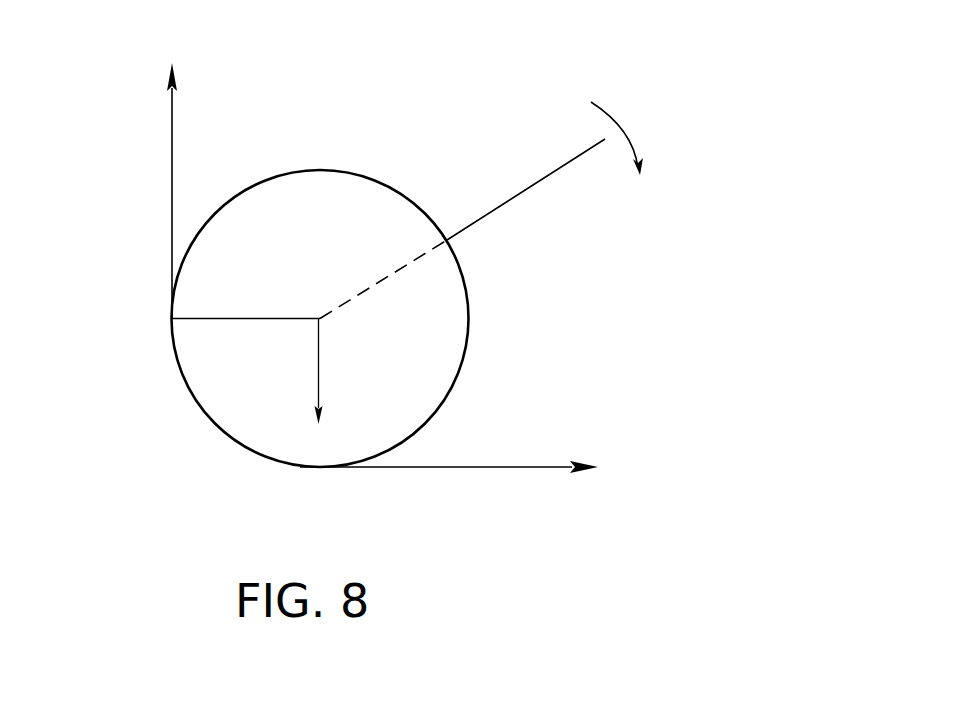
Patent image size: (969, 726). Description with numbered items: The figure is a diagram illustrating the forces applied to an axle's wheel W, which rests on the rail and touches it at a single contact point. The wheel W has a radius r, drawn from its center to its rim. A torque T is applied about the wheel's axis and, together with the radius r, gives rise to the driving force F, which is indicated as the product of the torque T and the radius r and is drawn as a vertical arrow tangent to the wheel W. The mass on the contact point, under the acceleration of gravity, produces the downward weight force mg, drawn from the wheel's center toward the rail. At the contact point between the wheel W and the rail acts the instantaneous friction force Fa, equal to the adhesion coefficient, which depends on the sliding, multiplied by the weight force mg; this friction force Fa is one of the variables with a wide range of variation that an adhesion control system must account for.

The wheel W is at (347, 218).
The wheel radius r is at (213, 318).
The driving force F is at (172, 175).
The torque T is at (621, 131).
The weight force mg is at (342, 372).
The friction force Fa is at (440, 467).